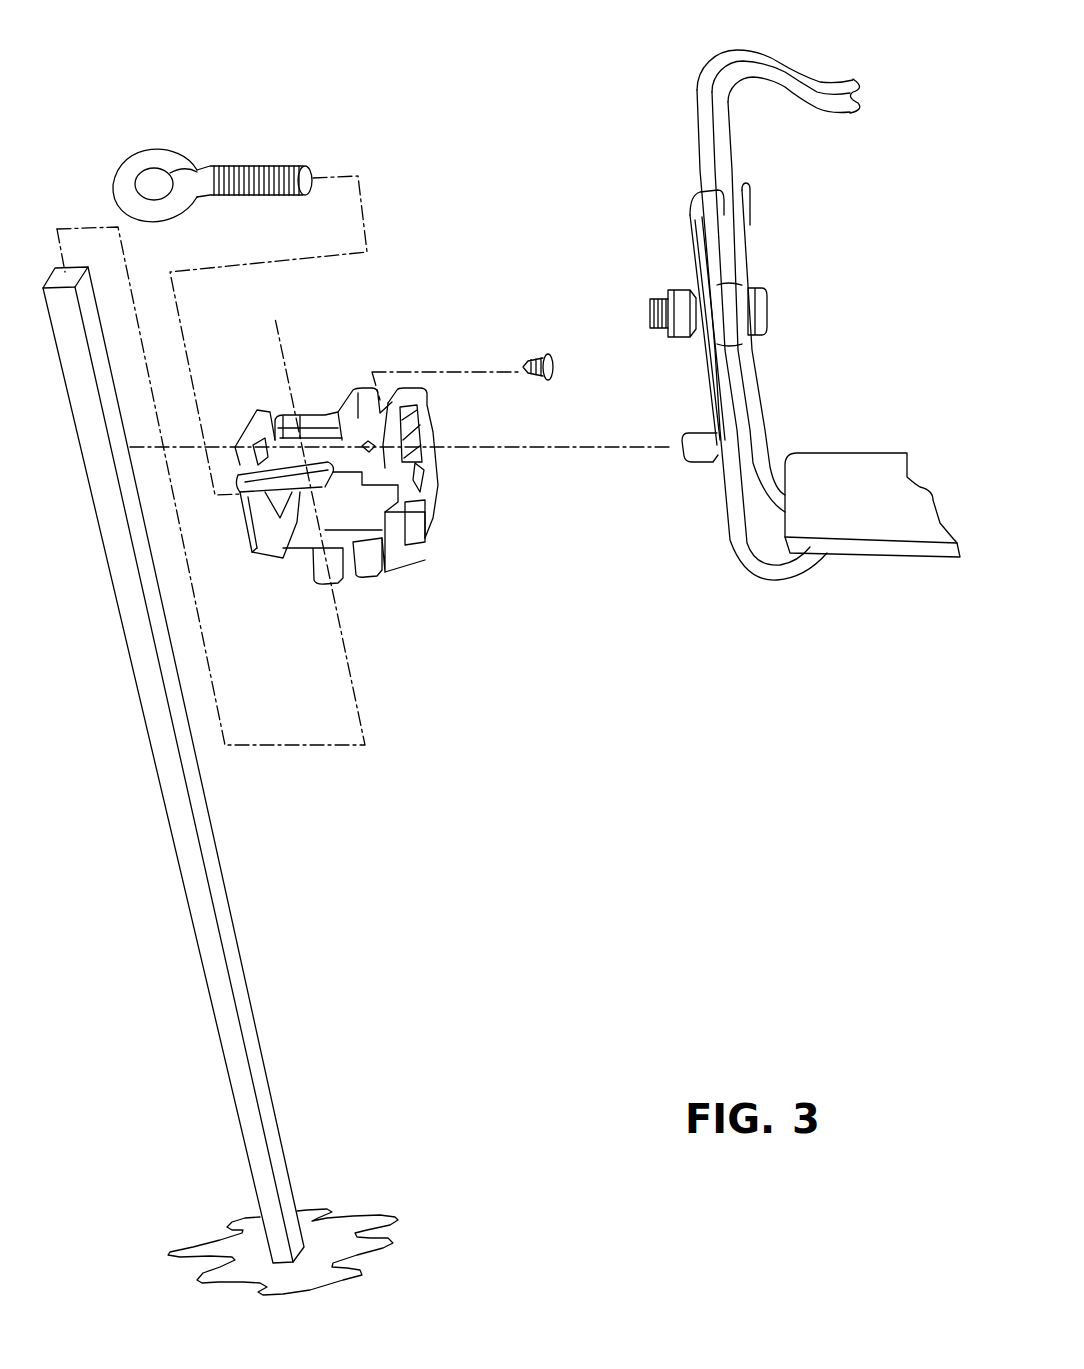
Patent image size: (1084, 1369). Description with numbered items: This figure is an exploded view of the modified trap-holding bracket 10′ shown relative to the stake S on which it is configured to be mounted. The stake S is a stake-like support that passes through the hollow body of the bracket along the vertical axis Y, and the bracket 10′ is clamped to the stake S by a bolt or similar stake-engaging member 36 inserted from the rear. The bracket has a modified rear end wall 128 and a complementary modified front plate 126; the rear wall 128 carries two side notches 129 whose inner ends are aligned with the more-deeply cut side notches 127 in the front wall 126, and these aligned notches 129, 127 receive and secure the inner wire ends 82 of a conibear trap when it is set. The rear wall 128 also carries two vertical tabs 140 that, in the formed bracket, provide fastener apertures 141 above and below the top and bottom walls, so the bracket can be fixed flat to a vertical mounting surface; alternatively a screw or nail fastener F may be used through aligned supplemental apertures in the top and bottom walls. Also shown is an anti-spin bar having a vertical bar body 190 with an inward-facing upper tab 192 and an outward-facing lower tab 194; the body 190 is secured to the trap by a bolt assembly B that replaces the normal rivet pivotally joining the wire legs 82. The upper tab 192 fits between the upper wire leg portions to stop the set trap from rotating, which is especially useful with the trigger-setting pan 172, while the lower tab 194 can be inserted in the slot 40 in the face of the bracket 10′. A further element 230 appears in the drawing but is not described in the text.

The bolt 36 is at (200, 168).
The slot 40 is at (440, 432).
The fastener aperture 141 is at (258, 433).
The vertical tab 140 is at (272, 432).
The rear end wall 128 is at (247, 516).
The side notch 129 is at (253, 556).
The bar 230 is at (283, 530).
The front plate 126 is at (410, 503).
The side notch 127 is at (382, 575).
The inner wire end 82 is at (700, 103).
The upper tab 192 is at (713, 193).
The vertical bar body 190 is at (686, 273).
The lower tab 194 is at (695, 465).
The pan 172 is at (850, 475).
The bolt assembly B is at (762, 310).
The fastener F is at (555, 358).
The stake S is at (228, 905).
The axis Y is at (275, 360).
The modified bracket 10′ is at (455, 333).